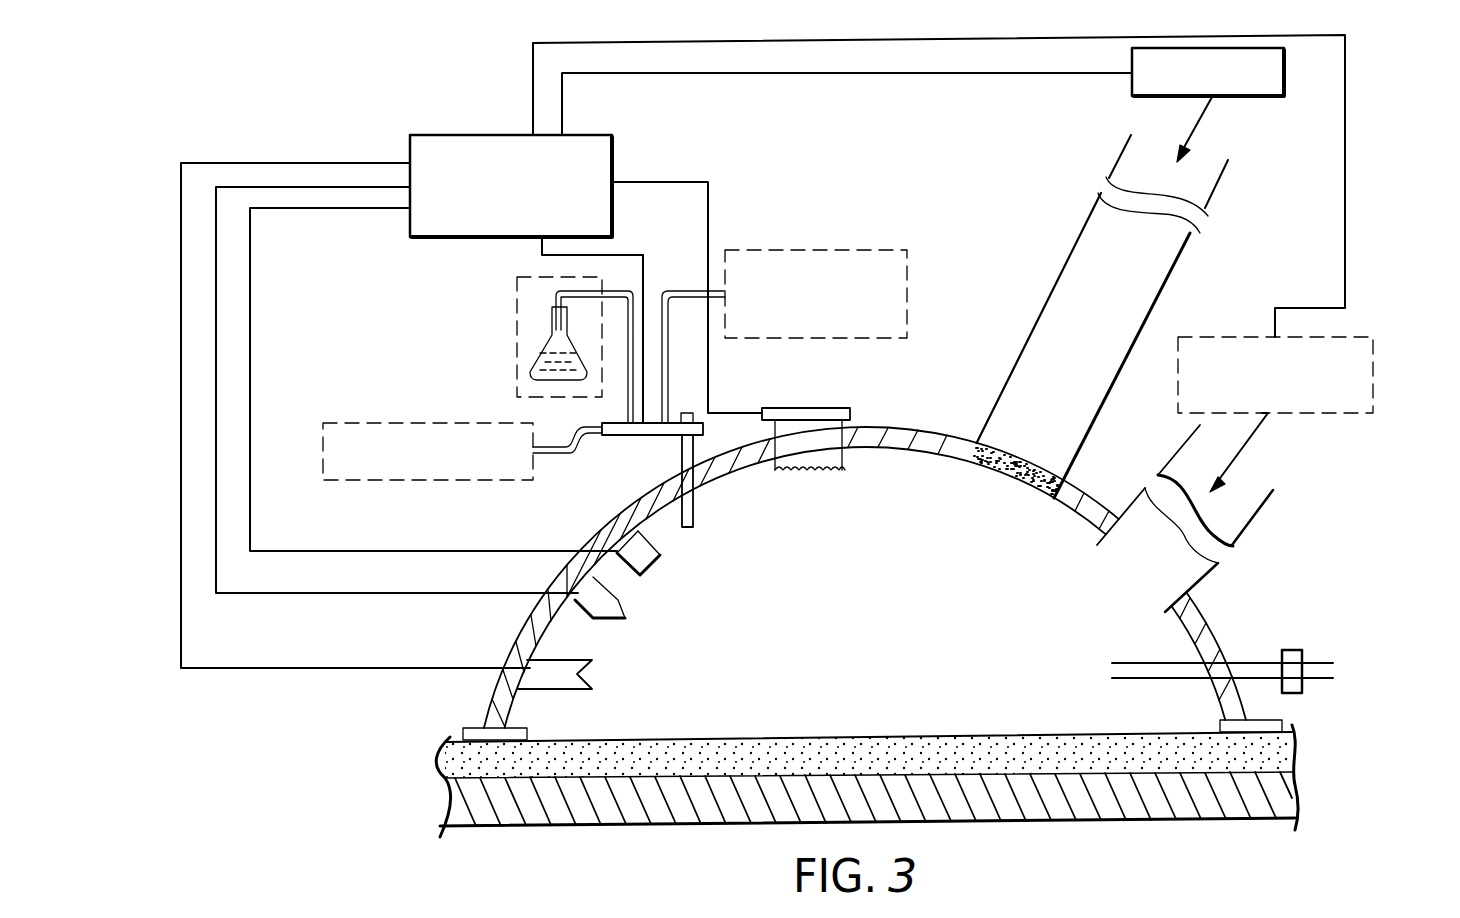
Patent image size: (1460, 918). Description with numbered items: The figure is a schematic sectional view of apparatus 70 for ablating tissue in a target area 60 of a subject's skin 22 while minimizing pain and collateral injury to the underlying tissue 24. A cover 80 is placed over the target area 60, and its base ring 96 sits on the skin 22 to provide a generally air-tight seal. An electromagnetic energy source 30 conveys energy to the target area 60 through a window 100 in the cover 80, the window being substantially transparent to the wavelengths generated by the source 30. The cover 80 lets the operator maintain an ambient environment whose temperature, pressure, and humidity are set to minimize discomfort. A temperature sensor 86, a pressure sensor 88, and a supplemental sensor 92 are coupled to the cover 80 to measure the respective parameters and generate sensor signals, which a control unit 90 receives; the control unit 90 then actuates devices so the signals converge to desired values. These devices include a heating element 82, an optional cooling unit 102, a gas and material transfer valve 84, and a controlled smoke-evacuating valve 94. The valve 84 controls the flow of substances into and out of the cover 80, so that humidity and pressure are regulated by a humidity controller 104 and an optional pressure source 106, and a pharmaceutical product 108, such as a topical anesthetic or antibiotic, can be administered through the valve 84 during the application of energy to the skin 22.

The skin 22 is at (1270, 751).
The underlying tissue 24 is at (1280, 795).
The electromagnetic energy source 30 is at (1230, 97).
The target area 60 is at (888, 738).
The apparatus 70 is at (1357, 168).
The cover 80 is at (488, 708).
The heating element 82 is at (812, 470).
The gas and material transfer valve 84 is at (693, 507).
The temperature sensor 86 is at (641, 575).
The pressure sensor 88 is at (616, 605).
The control unit 90 is at (410, 140).
The supplemental sensor 92 is at (593, 676).
The controlled smoke-evacuating valve 94 is at (1258, 663).
The base ring 96 is at (528, 732).
The window 100 is at (1007, 480).
The cooling unit 102 is at (1215, 337).
The humidity controller 104 is at (445, 423).
The pressure source 106 is at (907, 297).
The pharmaceutical product 108 is at (517, 345).